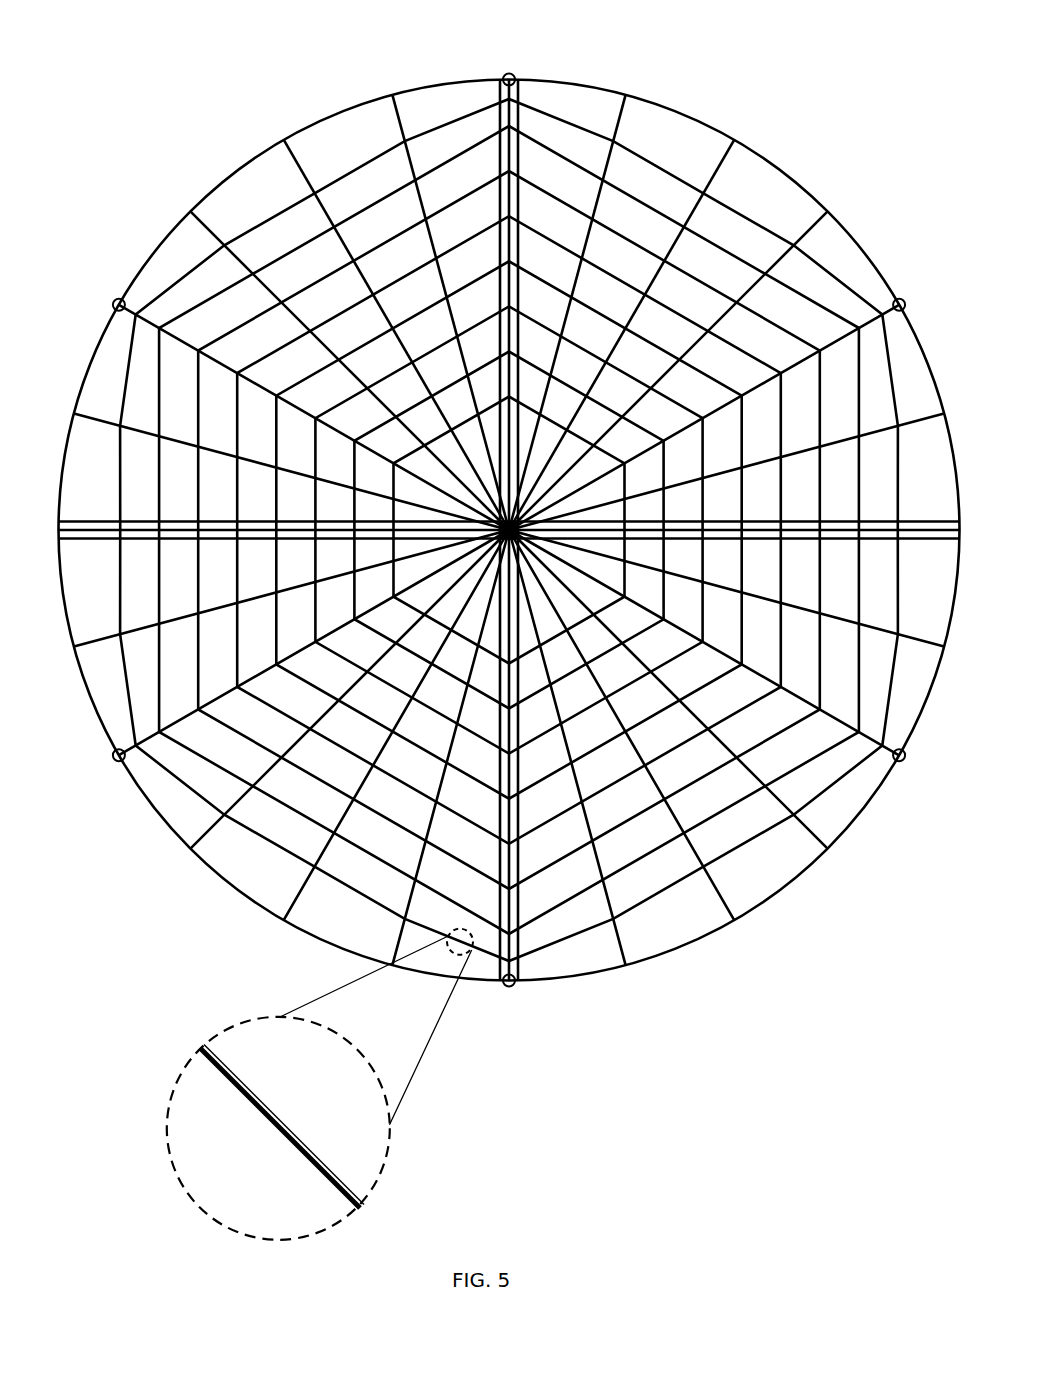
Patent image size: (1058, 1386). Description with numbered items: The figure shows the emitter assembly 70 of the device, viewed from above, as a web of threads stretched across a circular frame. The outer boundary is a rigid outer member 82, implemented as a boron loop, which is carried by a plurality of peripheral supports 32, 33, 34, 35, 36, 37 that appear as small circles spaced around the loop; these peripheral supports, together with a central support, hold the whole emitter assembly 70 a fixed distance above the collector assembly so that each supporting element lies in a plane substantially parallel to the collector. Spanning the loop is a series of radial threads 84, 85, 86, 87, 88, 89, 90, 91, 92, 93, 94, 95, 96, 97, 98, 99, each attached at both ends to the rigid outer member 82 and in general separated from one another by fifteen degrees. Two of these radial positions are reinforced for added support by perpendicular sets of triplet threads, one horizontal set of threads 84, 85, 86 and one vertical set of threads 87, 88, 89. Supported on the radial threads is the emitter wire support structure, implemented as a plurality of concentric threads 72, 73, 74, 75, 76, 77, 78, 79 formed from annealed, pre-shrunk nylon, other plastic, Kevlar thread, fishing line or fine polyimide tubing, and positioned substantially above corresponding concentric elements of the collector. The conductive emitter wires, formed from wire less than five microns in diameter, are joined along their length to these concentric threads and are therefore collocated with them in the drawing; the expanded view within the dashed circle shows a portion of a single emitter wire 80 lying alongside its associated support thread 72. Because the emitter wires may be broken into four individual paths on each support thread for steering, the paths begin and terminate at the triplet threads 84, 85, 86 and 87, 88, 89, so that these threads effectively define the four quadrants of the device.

The emitter assembly 70 is at (878, 81).
The rigid outer member 82 is at (700, 122).
The peripheral support 32 is at (113, 753).
The peripheral support 33 is at (113, 304).
The peripheral support 34 is at (514, 75).
The peripheral support 35 is at (905, 300).
The peripheral support 36 is at (905, 753).
The peripheral support 37 is at (515, 986).
The emitter wire support structure 72 is at (321, 880).
The emitter wire support structure 73 is at (338, 845).
The emitter wire support structure 74 is at (360, 806).
The emitter wire support structure 75 is at (378, 773).
The emitter wire support structure 76 is at (396, 741).
The emitter wire support structure 77 is at (411, 706).
The emitter wire support structure 78 is at (430, 671).
The emitter wire support structure 79 is at (448, 638).
The emitter wire 80 is at (297, 1128).
The radial thread 84 is at (73, 541).
The radial thread 85 is at (64, 523).
The radial thread 86 is at (66, 532).
The radial thread 87 is at (498, 127).
The radial thread 88 is at (513, 161).
The radial thread 89 is at (520, 92).
The radial thread 90 is at (80, 416).
The radial thread 91 is at (146, 310).
The radial thread 92 is at (209, 223).
The radial thread 93 is at (306, 166).
The radial thread 94 is at (403, 119).
The radial thread 95 is at (618, 130).
The radial thread 96 is at (712, 184).
The radial thread 97 is at (801, 243).
The radial thread 98 is at (883, 309).
The radial thread 99 is at (905, 426).